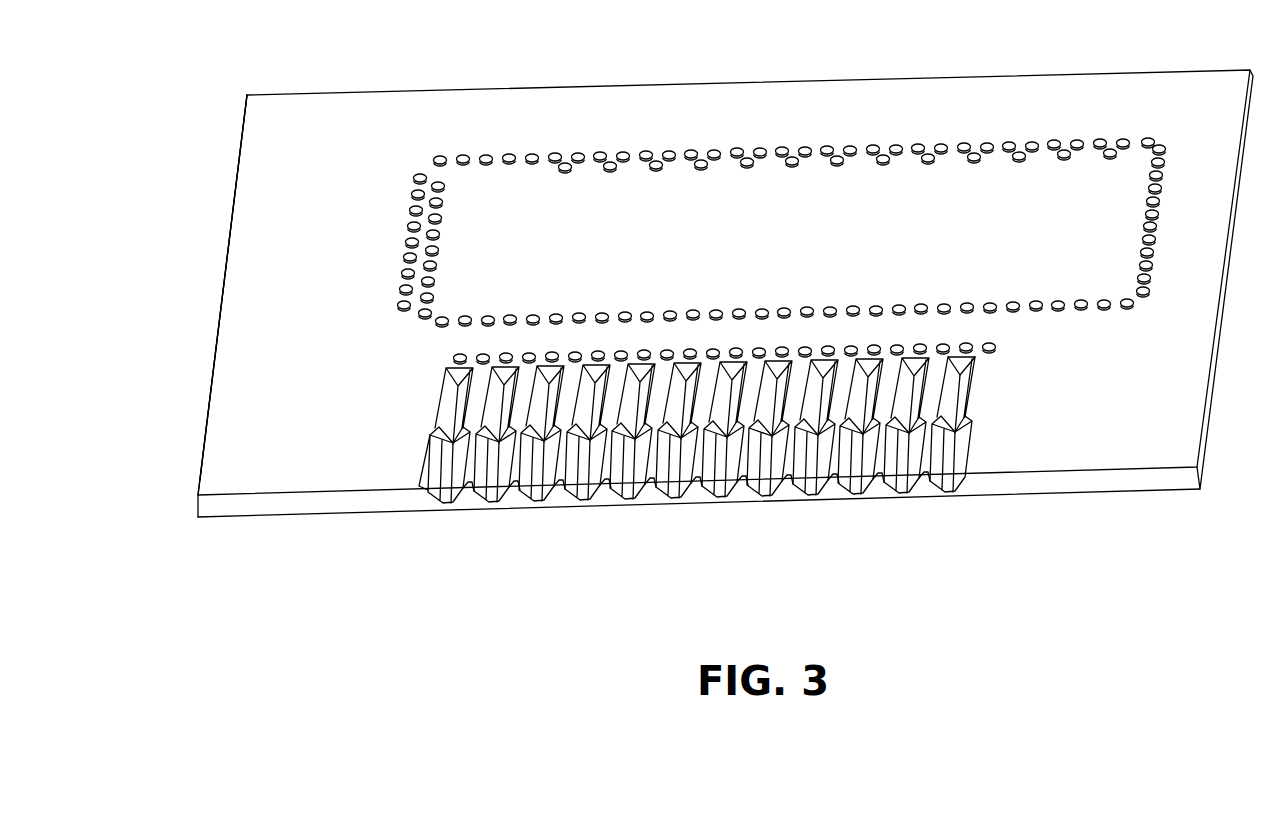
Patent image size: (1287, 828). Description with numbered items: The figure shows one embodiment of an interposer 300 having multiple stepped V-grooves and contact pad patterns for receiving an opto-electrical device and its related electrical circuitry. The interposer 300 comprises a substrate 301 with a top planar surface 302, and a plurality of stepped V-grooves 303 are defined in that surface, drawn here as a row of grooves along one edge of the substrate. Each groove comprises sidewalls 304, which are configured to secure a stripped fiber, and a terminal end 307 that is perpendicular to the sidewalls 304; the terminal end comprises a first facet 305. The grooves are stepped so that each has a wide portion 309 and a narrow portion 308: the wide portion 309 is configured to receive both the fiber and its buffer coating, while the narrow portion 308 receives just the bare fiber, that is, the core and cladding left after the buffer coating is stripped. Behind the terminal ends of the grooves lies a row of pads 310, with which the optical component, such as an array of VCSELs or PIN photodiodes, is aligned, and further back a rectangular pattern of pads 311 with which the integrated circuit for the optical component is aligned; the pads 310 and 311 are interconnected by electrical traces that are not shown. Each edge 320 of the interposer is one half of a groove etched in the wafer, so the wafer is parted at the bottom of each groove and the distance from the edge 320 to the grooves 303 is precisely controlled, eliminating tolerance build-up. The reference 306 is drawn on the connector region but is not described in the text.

The interposer 300 is at (318, 497).
The substrate 301 is at (260, 508).
The top planar surface 302 is at (230, 475).
The stepped V-grooves 303 is at (414, 473).
The sidewalls 304 is at (523, 480).
The first facet 305 is at (457, 374).
The edge connector 306 is at (711, 467).
The terminal end 307 is at (960, 363).
The narrow portion 308 is at (965, 398).
The wide portion 309 is at (950, 462).
The pads 310 is at (987, 345).
The pads 311 is at (1152, 215).
The edge 320 is at (1208, 393).